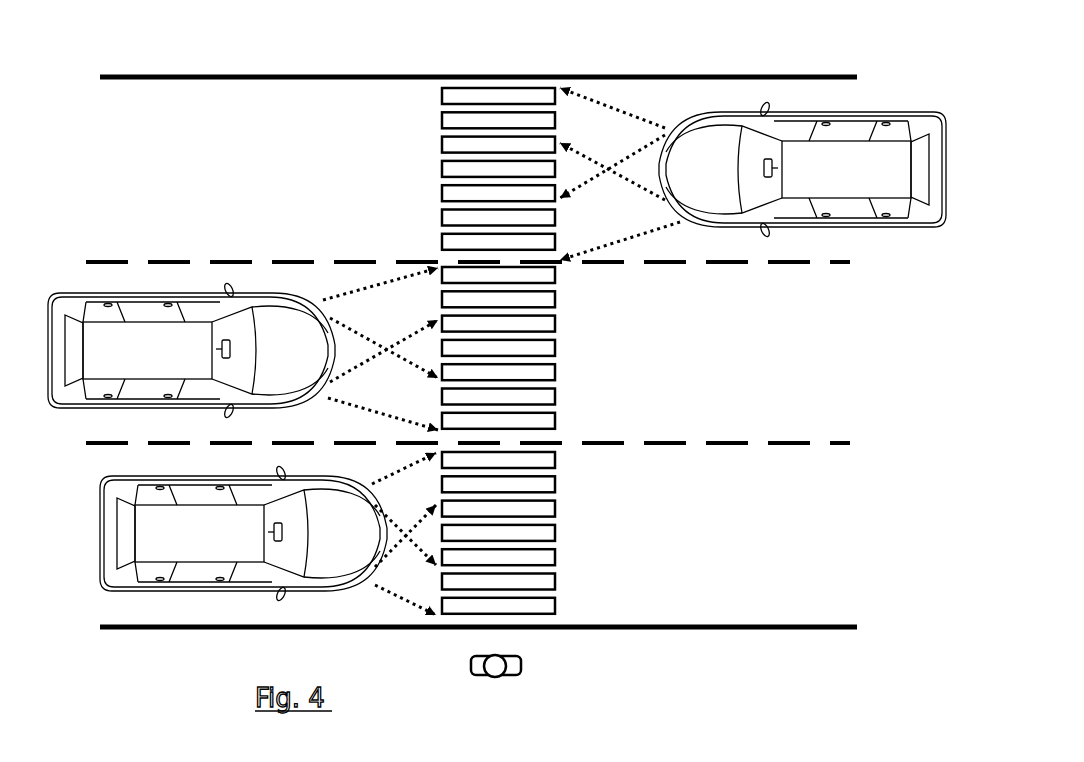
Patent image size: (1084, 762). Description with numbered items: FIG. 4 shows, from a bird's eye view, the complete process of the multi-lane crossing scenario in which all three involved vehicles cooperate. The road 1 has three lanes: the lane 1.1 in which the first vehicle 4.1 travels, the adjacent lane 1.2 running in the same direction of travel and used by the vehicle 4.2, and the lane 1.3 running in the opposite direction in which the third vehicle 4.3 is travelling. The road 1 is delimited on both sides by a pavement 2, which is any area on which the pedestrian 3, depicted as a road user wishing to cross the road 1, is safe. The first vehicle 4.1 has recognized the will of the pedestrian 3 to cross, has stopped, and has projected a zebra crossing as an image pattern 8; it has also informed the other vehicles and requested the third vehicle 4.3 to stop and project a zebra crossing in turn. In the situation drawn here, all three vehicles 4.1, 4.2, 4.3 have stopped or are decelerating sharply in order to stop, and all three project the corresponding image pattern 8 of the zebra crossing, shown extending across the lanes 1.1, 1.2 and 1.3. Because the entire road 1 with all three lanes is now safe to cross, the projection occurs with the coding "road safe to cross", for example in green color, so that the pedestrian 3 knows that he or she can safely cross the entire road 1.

The road 1 is at (752, 93).
The pavement 2 is at (223, 52).
The pedestrian 3 is at (513, 670).
The first vehicle 4.1 is at (205, 545).
The vehicle 4.2 is at (105, 350).
The third vehicle 4.3 is at (866, 160).
The image pattern 8 is at (495, 358).
The lane 1.1 is at (850, 606).
The lane 1.2 is at (850, 416).
The lane 1.3 is at (149, 234).